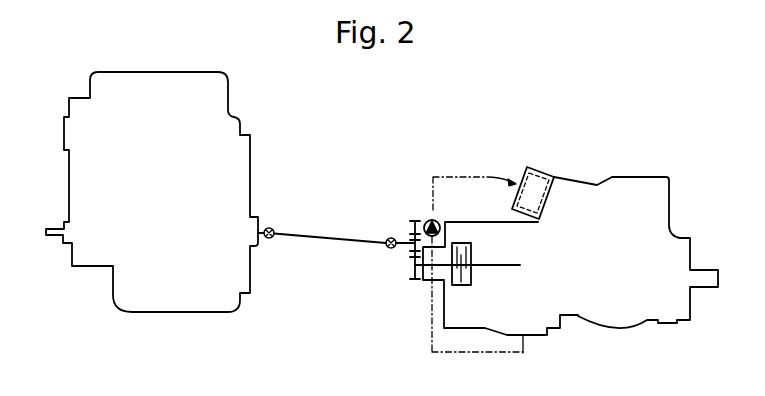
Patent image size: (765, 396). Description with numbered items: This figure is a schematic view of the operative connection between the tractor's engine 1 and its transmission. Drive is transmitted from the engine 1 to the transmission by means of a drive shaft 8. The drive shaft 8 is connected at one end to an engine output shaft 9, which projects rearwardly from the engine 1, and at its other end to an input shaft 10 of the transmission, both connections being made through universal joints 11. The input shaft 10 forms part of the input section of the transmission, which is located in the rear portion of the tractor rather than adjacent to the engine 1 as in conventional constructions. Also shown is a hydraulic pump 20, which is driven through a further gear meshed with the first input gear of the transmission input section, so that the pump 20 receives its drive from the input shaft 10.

The engine 1 is at (188, 300).
The drive shaft 8 is at (325, 240).
The engine output shaft 9 is at (261, 229).
The input shaft 10 is at (405, 250).
The universal joints 11 is at (275, 229).
The hydraulic pump 20 is at (426, 219).